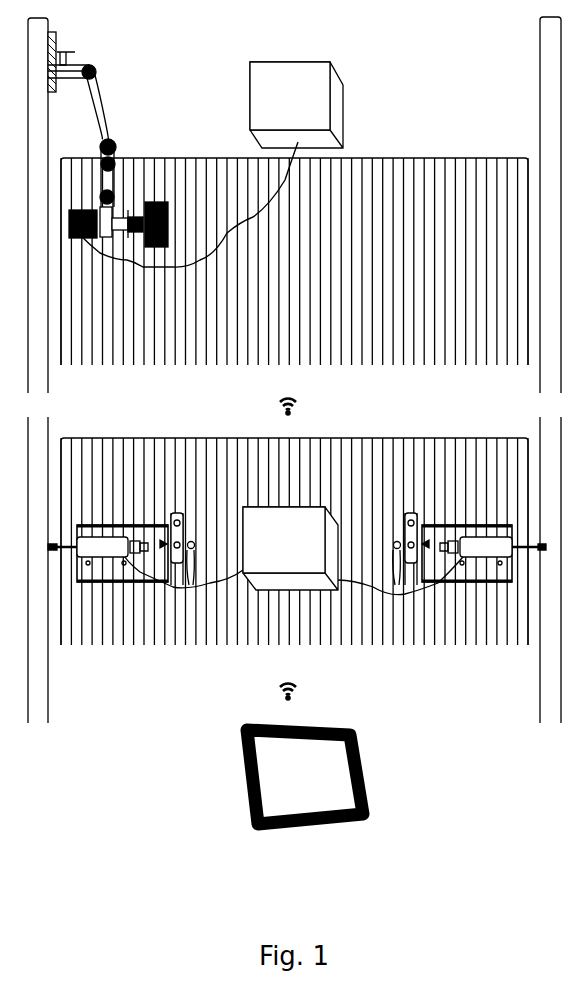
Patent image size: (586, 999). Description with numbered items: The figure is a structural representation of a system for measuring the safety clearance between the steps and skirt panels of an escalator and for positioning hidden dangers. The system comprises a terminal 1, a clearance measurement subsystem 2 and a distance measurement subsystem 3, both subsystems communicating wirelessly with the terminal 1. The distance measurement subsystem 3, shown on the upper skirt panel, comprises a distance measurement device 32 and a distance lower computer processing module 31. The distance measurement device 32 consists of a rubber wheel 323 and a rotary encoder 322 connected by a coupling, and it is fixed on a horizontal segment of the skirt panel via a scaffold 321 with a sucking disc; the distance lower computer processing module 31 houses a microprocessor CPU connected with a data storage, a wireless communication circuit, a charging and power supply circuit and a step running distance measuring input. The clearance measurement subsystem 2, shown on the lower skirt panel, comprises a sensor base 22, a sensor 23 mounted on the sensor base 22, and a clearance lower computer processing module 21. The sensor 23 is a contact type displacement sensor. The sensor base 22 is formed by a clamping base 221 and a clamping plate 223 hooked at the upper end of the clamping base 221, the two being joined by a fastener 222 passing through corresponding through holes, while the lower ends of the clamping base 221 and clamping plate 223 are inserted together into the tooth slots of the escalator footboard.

The terminal 1 is at (325, 765).
The clearance measurement subsystem 2 is at (290, 520).
The clearance lower computer processing module 21 is at (256, 520).
The sensor base 22 is at (436, 494).
The clamping base 221 is at (467, 540).
The fastener 222 is at (426, 542).
The clamping plate 223 is at (397, 543).
The sensor 23 is at (121, 537).
The distance measurement subsystem 3 is at (306, 112).
The distance lower computer processing module 31 is at (262, 108).
The distance measurement device 32 is at (173, 188).
The scaffold 321 is at (110, 180).
The rotary encoder 322 is at (78, 208).
The rubber wheel 323 is at (167, 203).